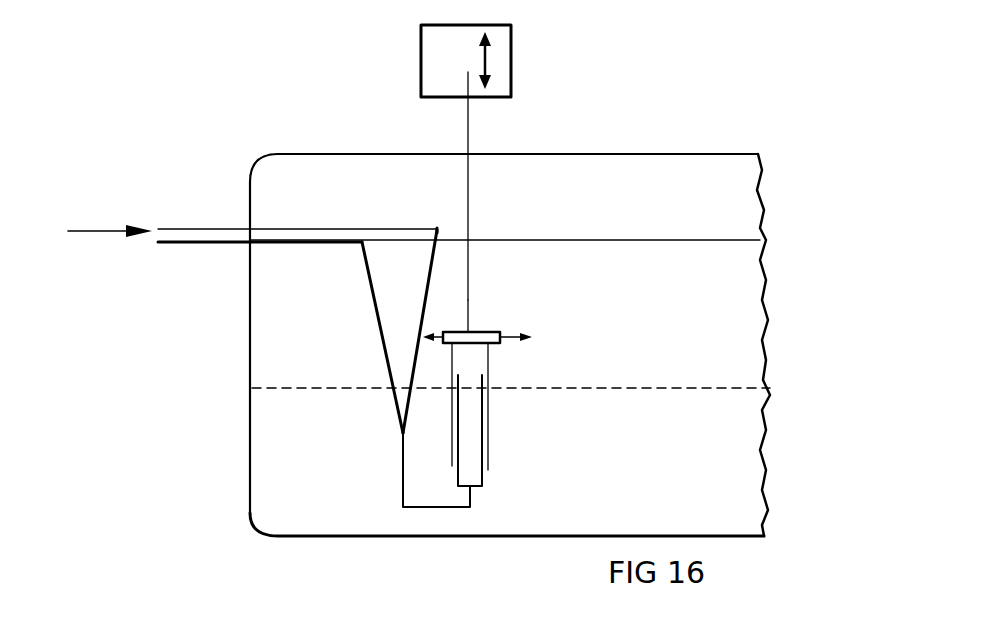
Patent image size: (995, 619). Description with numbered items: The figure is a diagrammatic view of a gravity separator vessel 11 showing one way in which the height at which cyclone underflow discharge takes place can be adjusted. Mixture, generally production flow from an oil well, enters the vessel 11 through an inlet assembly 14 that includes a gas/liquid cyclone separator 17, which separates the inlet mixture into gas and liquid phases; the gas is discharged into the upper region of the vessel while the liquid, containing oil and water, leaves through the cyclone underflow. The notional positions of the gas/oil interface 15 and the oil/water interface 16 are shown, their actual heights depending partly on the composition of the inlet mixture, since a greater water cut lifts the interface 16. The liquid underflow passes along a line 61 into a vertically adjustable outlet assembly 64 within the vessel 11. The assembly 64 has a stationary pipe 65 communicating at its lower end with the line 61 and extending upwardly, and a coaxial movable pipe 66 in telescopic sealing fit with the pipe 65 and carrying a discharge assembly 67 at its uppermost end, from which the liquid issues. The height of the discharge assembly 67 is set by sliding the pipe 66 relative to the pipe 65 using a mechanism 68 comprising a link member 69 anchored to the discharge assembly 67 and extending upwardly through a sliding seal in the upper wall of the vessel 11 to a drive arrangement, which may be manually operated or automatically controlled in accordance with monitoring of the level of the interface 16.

The gravity separator vessel 11 is at (570, 153).
The inlet assembly 14 is at (207, 226).
The gas/oil interface 15 is at (717, 240).
The oil/water interface 16 is at (708, 388).
The gas/liquid cyclone separator 17 is at (380, 288).
The line 61 is at (403, 460).
The vertically adjustable outlet assembly 64 is at (488, 311).
The stationary pipe 65 is at (482, 484).
The movable pipe 66 is at (490, 363).
The discharge assembly 67 is at (492, 328).
The mechanism 68 is at (482, 108).
The link member 69 is at (468, 192).